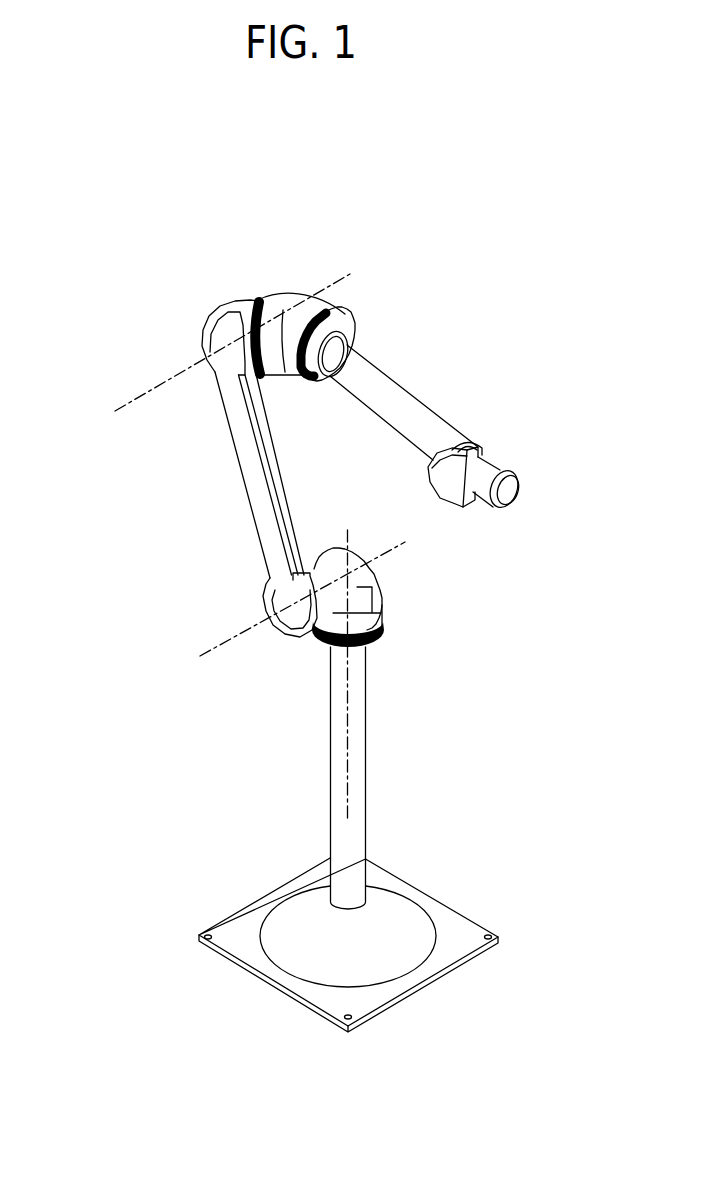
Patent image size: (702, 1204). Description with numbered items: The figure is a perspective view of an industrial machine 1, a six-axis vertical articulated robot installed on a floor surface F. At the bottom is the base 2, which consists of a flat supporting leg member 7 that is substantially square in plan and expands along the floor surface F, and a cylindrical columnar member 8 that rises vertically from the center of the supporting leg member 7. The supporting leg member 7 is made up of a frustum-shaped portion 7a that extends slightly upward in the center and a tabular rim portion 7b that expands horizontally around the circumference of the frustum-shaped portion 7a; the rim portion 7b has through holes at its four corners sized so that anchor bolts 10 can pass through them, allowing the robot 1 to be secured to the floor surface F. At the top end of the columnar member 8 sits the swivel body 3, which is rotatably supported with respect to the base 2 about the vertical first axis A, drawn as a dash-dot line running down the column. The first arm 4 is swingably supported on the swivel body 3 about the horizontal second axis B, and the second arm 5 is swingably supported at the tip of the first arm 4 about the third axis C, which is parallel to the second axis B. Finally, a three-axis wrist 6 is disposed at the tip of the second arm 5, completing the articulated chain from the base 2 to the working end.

The industrial machine 1 is at (75, 250).
The base 2 is at (262, 885).
The swivel body 3 is at (384, 616).
The first arm 4 is at (242, 476).
The second arm 5 is at (287, 288).
The three-axis wrist 6 is at (520, 503).
The supporting leg member 7 is at (245, 927).
The frustum-shaped portion 7a is at (388, 908).
The rim portion 7b is at (453, 933).
The columnar member 8 is at (330, 783).
The anchor bolt 10 is at (357, 1008).
The first axis A is at (348, 736).
The second axis B is at (227, 633).
The third axis C is at (149, 385).
The floor surface F is at (147, 960).